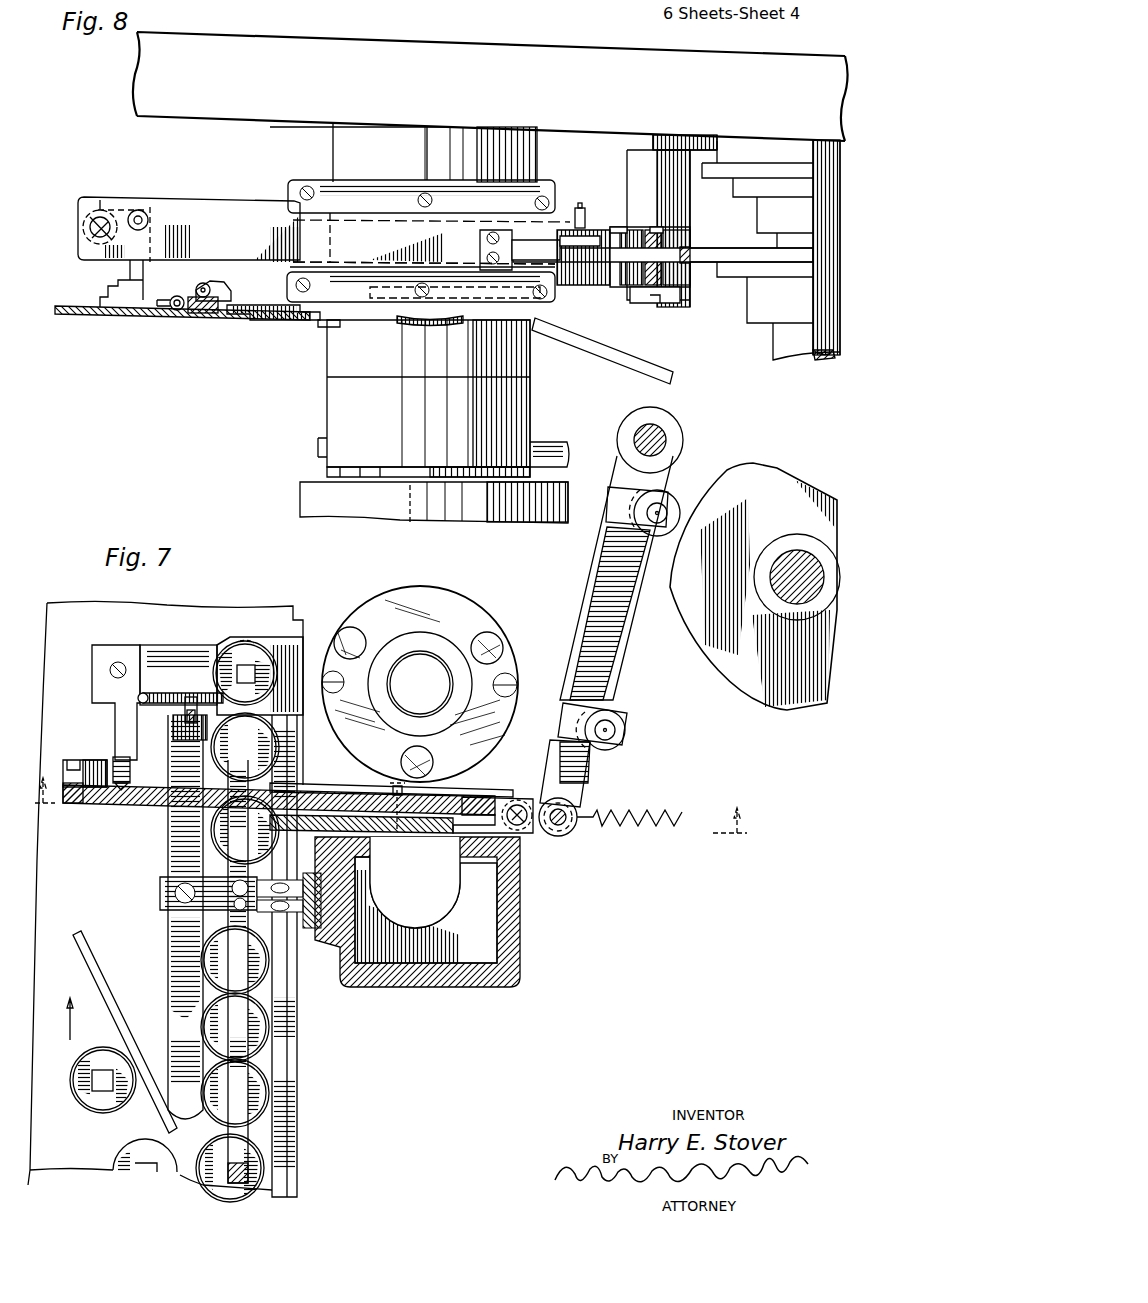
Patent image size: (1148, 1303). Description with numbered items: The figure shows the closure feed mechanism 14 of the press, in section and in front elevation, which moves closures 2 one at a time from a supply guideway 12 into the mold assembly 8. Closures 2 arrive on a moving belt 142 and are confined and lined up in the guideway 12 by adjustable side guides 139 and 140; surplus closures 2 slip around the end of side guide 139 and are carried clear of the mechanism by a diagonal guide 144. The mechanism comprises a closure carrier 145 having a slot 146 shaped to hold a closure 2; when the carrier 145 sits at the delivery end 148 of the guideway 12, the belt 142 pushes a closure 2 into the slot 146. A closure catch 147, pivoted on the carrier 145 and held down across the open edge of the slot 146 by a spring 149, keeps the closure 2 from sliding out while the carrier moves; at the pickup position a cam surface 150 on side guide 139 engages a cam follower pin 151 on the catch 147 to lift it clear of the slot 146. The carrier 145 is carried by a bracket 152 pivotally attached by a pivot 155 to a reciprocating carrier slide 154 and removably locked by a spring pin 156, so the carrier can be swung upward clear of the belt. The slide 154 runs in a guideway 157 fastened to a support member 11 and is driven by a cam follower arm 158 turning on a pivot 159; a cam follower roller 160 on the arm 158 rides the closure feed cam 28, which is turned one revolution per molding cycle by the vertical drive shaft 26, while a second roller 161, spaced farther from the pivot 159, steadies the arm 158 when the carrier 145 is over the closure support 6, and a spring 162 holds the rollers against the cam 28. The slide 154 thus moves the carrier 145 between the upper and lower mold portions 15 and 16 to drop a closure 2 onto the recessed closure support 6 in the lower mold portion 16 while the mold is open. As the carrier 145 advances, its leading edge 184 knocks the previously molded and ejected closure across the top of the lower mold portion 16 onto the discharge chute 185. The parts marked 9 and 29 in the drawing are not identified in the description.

In FIG. 8, the closure 2 is at (464, 318).
In FIG. 7, the closure 2 is at (266, 644).
In FIG. 8, the closure support 6 is at (342, 353).
In FIG. 7, the mold assembly 8 is at (392, 795).
In FIG. 8, the top beam 9 is at (682, 60).
In FIG. 7, the support member 11 is at (520, 910).
In FIG. 7, the guideway 12 is at (168, 930).
In FIG. 8, the closure feed mechanism 14 is at (585, 291).
In FIG. 8, the upper mold portion 15 is at (332, 150).
In FIG. 8, the lower mold portion 16 is at (516, 411).
In FIG. 8, the vertical drive shaft 26 is at (773, 350).
In FIG. 8, the closure feed cam 28 is at (718, 265).
In FIG. 7, the closure feed cam 28 is at (746, 692).
In FIG. 8, the bracket 29 is at (760, 169).
In FIG. 7, the side guide 139 is at (168, 984).
In FIG. 7, the side guide 140 is at (290, 1040).
In FIG. 8, the moving belt 142 is at (138, 318).
In FIG. 7, the moving belt 142 is at (272, 1182).
In FIG. 7, the diagonal guide 144 is at (95, 974).
In FIG. 8, the closure carrier 145 is at (280, 318).
In FIG. 7, the closure carrier 145 is at (164, 650).
In FIG. 7, the slot 146 is at (308, 672).
In FIG. 8, the closure catch 147 is at (222, 284).
In FIG. 7, the closure catch 147 is at (200, 690).
In FIG. 7, the delivery end 148 is at (300, 736).
In FIG. 8, the spring 149 is at (180, 296).
In FIG. 7, the spring 149 is at (170, 692).
In FIG. 8, the cam surface 150 is at (201, 314).
In FIG. 7, the cam surface 150 is at (195, 738).
In FIG. 8, the cam follower pin 151 is at (204, 283).
In FIG. 7, the cam follower pin 151 is at (184, 716).
In FIG. 8, the bracket 152 is at (140, 243).
In FIG. 7, the bracket 152 is at (114, 714).
In FIG. 8, the carrier slide 154 is at (153, 200).
In FIG. 7, the carrier slide 154 is at (146, 810).
In FIG. 8, the pivot 155 is at (104, 212).
In FIG. 7, the pivot 155 is at (101, 761).
In FIG. 7, the spring pin 156 is at (130, 779).
In FIG. 8, the guideway 157 is at (380, 193).
In FIG. 7, the guideway 157 is at (350, 792).
In FIG. 7, the cam follower arm 158 is at (603, 679).
In FIG. 8, the pivot 159 is at (633, 180).
In FIG. 7, the pivot 159 is at (668, 434).
In FIG. 8, the cam follower roller 160 is at (690, 241).
In FIG. 7, the cam follower roller 160 is at (672, 494).
In FIG. 8, the second cam follower roller 161 is at (622, 262).
In FIG. 7, the second cam follower roller 161 is at (628, 722).
In FIG. 7, the spring 162 is at (652, 812).
In FIG. 8, the leading edge 184 is at (341, 333).
In FIG. 8, the discharge chute 185 is at (640, 362).